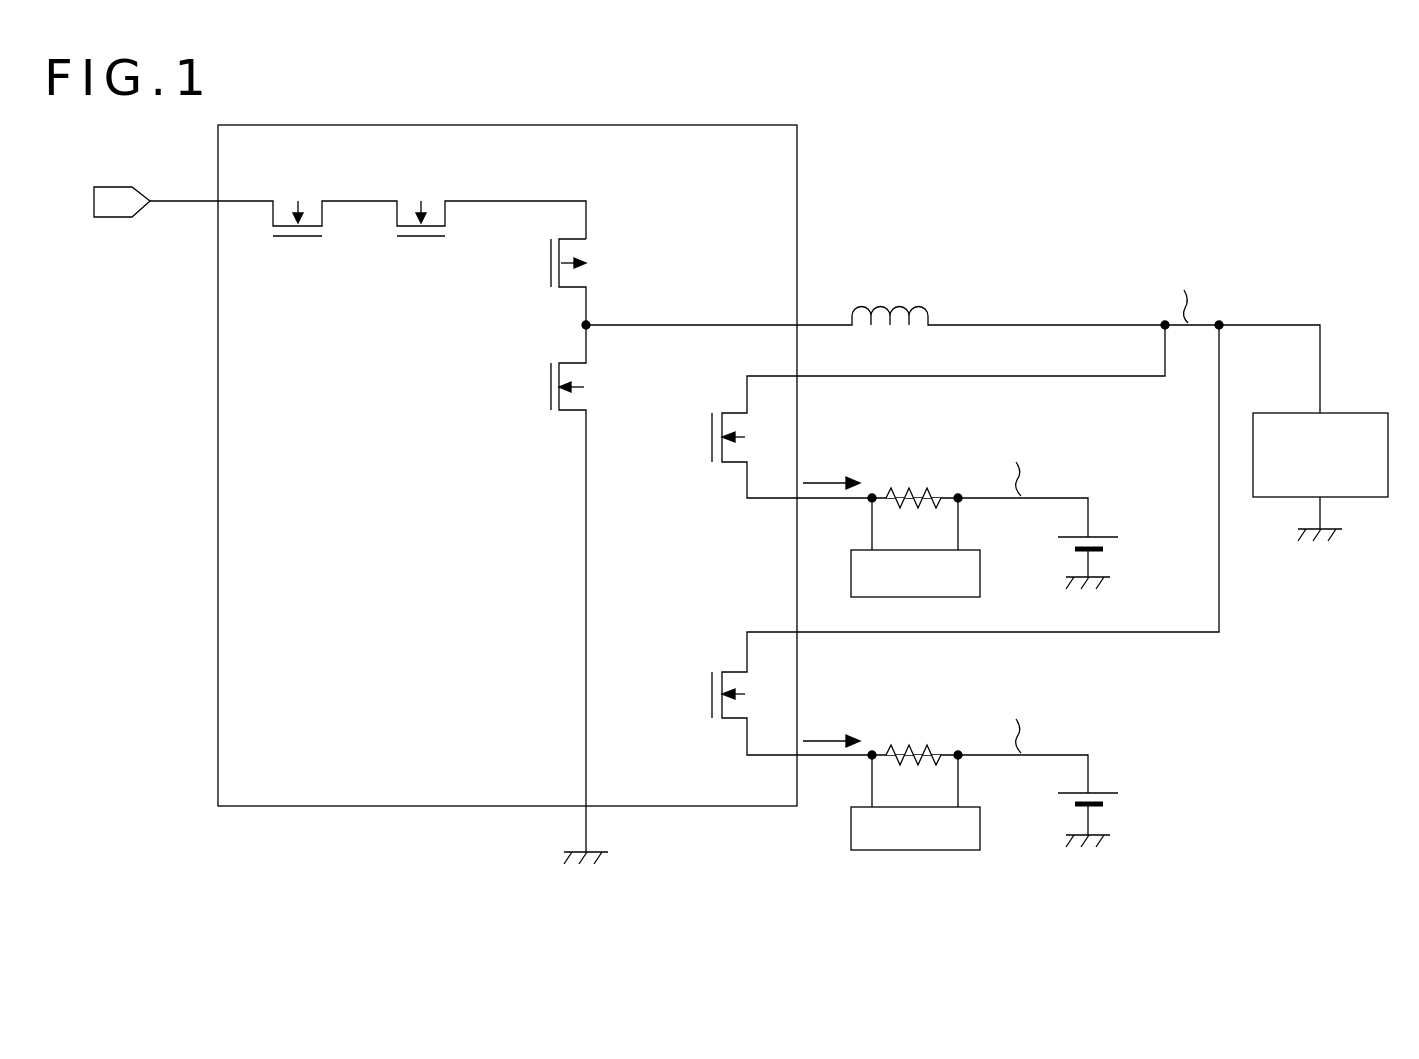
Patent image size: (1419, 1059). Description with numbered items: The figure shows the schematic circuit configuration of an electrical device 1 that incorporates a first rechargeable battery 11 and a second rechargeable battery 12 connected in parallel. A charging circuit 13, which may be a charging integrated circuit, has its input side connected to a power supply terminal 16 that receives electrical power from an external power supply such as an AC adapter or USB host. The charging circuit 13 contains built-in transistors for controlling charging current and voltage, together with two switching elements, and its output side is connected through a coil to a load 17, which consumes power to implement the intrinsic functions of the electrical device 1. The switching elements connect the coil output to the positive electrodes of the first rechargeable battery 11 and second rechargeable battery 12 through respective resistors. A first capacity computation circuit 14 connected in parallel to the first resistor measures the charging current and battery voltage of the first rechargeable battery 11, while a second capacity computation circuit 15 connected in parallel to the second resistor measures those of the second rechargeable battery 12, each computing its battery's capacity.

The electrical device 1 is at (1300, 813).
The first rechargeable battery 11 is at (1126, 544).
The second rechargeable battery 12 is at (1126, 800).
The charging circuit 13 is at (218, 735).
The first capacity computation circuit 14 is at (915, 547).
The second capacity computation circuit 15 is at (915, 802).
The power supply terminal 16 is at (109, 187).
The load 17 is at (1320, 477).